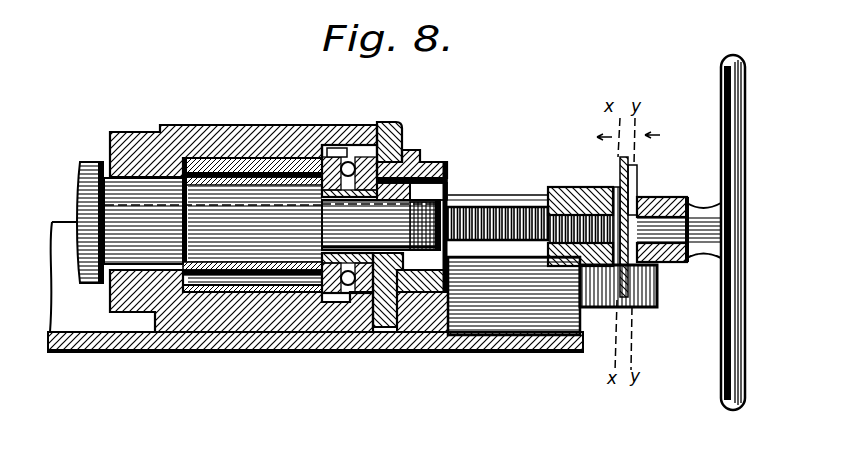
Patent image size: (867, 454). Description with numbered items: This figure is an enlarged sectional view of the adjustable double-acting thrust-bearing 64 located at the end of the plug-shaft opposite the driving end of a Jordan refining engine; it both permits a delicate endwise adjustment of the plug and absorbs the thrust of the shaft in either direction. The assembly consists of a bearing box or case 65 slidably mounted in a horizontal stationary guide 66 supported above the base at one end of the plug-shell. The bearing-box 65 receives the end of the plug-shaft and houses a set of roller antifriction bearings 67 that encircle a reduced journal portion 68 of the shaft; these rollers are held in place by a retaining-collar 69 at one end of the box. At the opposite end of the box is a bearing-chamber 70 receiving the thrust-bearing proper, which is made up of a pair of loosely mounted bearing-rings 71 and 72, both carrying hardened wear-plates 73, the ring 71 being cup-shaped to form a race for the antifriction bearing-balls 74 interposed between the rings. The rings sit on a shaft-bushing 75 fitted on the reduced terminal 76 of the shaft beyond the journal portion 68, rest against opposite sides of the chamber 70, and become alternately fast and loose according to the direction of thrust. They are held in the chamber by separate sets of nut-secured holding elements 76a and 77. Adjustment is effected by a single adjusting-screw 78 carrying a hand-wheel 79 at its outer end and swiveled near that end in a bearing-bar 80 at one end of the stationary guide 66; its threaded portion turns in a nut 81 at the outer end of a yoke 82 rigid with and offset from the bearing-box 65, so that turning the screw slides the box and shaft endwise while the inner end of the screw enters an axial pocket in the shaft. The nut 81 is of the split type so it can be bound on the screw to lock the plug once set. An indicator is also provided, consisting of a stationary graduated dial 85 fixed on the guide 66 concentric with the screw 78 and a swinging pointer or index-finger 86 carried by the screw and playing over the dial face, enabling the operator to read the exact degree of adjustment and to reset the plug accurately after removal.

The adjustable thrust-bearing 64 is at (268, 126).
The bearing box or case 65 is at (287, 128).
The horizontal stationary guide 66 is at (247, 352).
The roller antifriction bearings 67 is at (198, 170).
The reduced journal portion 68 is at (224, 197).
The retaining-collar 69 is at (110, 302).
The bearing-chamber 70 is at (341, 147).
The bearing-ring 71 is at (326, 148).
The bearing-ring 72 is at (378, 124).
The hardened wear-plates 73 is at (332, 333).
The antifriction bearing-balls 74 is at (403, 152).
The shaft-bushing 75 is at (300, 335).
The reduced terminal 76 is at (448, 168).
The nut-secured holding elements 76a is at (453, 170).
The nut-secured holding elements 77 is at (405, 353).
The adjusting-screw 78 is at (493, 217).
The hand-wheel 79 is at (746, 178).
The bearing-bar 80 is at (663, 198).
The nut 81 is at (592, 192).
The yoke 82 is at (528, 205).
The graduated dial 85 is at (632, 168).
The pointer or index-finger 86 is at (634, 184).